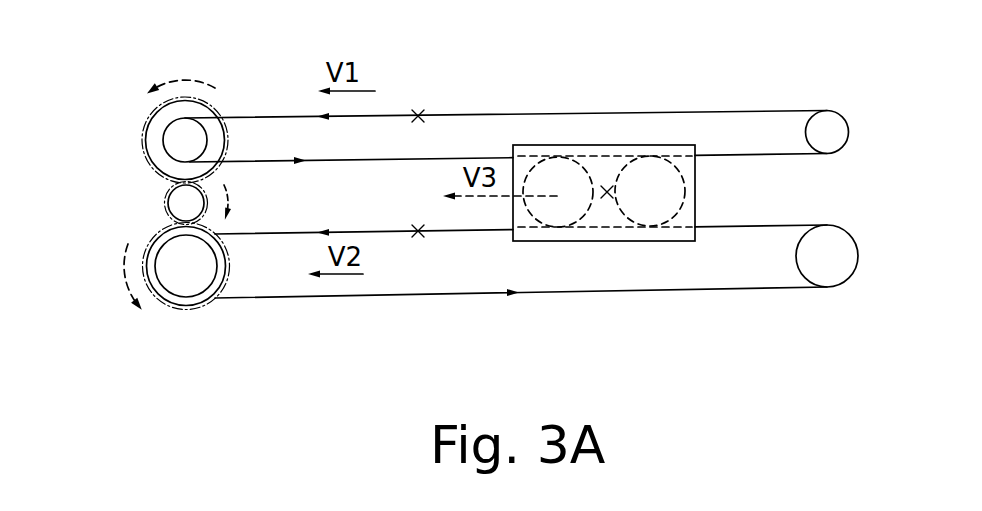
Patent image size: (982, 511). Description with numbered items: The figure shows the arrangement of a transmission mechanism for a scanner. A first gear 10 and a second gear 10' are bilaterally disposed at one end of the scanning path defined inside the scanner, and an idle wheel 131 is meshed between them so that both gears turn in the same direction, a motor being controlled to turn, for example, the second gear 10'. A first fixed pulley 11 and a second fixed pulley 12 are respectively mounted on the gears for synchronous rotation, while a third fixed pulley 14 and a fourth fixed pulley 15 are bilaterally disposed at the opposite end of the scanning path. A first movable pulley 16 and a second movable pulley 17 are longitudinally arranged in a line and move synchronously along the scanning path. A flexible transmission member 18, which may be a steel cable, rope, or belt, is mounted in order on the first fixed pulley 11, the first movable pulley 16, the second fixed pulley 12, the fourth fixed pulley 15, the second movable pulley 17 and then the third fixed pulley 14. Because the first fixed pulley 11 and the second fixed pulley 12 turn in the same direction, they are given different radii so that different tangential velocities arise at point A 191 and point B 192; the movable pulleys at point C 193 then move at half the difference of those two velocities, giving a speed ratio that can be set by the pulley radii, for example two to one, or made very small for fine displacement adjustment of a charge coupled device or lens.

The first gear 10 is at (165, 73).
The second gear 10' is at (111, 249).
The first fixed pulley 11 is at (193, 135).
The second fixed pulley 12 is at (177, 287).
The idle wheel 131 is at (188, 205).
The third fixed pulley 14 is at (820, 116).
The fourth fixed pulley 15 is at (825, 276).
The first movable pulley 16 is at (578, 158).
The second movable pulley 17 is at (673, 158).
The flexible transmission member 18 is at (683, 293).
The point A 191 is at (418, 110).
The point B 192 is at (418, 236).
The point C 193 is at (606, 197).